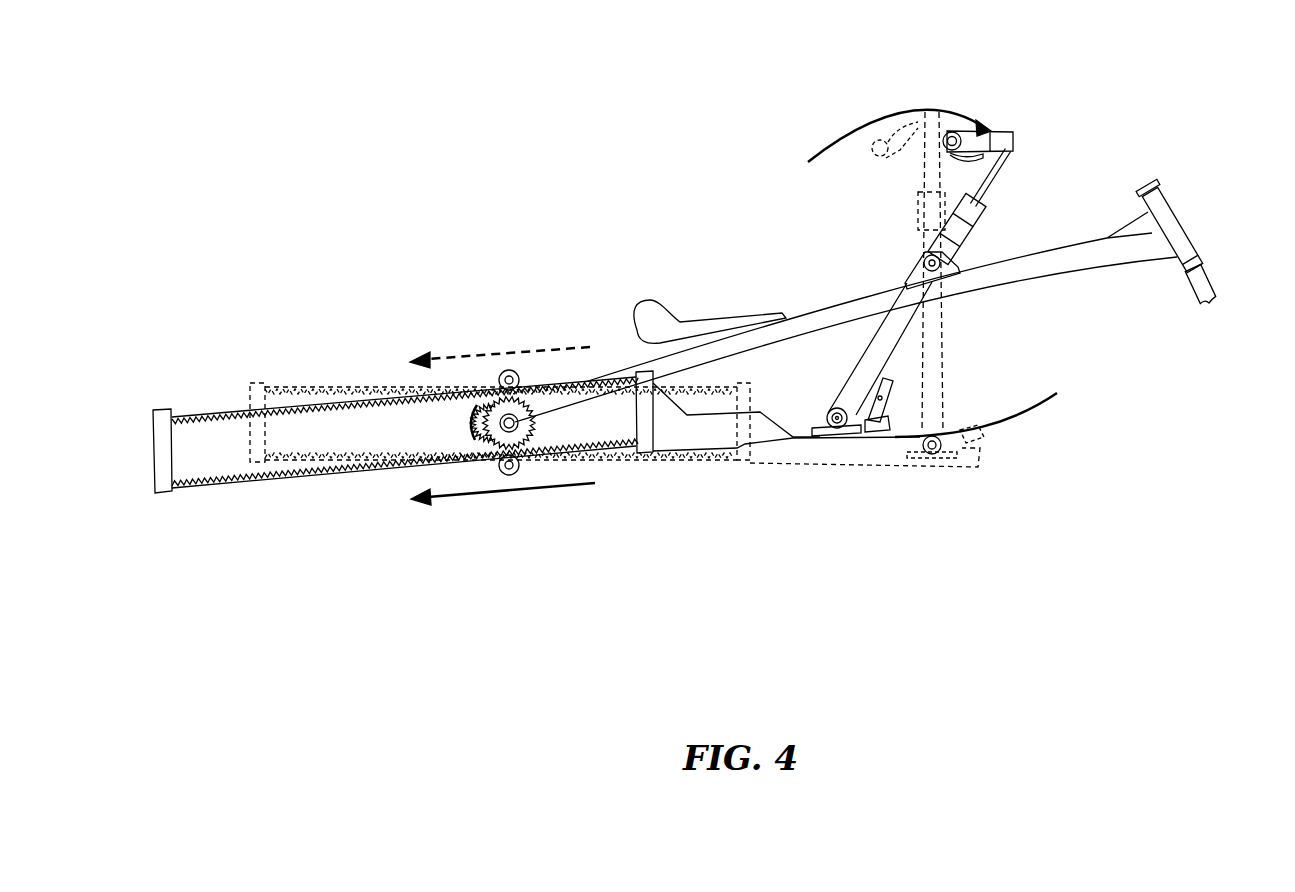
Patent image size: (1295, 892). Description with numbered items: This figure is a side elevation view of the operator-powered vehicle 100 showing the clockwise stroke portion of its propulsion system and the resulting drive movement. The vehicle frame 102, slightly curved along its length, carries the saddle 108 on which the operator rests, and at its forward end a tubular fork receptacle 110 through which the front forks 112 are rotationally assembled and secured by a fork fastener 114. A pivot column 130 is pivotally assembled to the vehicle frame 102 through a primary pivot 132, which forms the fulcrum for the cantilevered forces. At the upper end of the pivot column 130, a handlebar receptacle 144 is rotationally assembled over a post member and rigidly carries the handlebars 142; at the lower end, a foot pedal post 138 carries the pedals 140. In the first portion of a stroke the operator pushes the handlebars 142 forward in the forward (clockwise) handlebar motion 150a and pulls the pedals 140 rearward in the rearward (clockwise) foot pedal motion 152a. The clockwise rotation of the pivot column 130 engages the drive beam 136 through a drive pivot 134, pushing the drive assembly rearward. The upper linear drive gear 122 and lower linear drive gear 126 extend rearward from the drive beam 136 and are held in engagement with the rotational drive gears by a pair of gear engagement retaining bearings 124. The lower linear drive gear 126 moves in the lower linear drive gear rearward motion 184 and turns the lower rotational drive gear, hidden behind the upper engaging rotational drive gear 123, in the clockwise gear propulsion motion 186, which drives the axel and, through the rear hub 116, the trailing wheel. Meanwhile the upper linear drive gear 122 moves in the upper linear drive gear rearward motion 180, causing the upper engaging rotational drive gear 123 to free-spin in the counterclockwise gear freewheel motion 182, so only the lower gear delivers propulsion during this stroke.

The operator-powered vehicle 100 is at (375, 232).
The vehicle frame 102 is at (857, 308).
The saddle 108 is at (698, 323).
The fork receptacle 110 is at (1171, 227).
The front forks 112 is at (1192, 283).
The fork fastener 114 is at (1155, 185).
The rear hub 116 is at (531, 440).
The upper linear drive gear 122 is at (222, 414).
The upper engaging rotational drive gear 123 is at (528, 432).
The gear engagement retaining bearing 124 is at (512, 370).
The lower linear drive gear 126 is at (233, 482).
The pivot column 130 is at (860, 380).
The primary pivot 132 is at (921, 265).
The drive pivot 134 is at (820, 436).
The drive beam 136 is at (740, 435).
The foot pedal post 138 is at (973, 463).
The pedals 140 is at (895, 390).
The handlebars 142 is at (1010, 133).
The handlebar receptacle 144 is at (968, 222).
The forward (clockwise) handlebar motion 150a is at (853, 130).
The rearward (clockwise) foot pedal motion 152a is at (1030, 405).
The upper linear drive gear rearward motion 180 is at (473, 356).
The counterclockwise gear freewheel motion 182 is at (455, 462).
The lower linear drive gear rearward motion 184 is at (470, 494).
The clockwise gear propulsion motion 186 is at (483, 407).